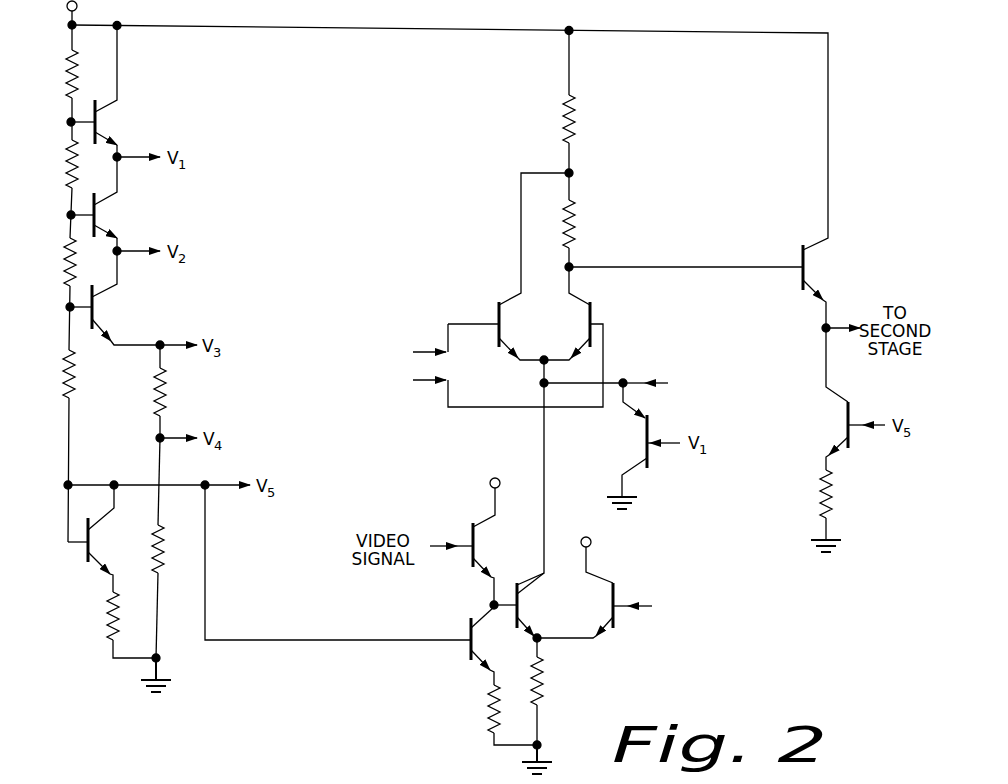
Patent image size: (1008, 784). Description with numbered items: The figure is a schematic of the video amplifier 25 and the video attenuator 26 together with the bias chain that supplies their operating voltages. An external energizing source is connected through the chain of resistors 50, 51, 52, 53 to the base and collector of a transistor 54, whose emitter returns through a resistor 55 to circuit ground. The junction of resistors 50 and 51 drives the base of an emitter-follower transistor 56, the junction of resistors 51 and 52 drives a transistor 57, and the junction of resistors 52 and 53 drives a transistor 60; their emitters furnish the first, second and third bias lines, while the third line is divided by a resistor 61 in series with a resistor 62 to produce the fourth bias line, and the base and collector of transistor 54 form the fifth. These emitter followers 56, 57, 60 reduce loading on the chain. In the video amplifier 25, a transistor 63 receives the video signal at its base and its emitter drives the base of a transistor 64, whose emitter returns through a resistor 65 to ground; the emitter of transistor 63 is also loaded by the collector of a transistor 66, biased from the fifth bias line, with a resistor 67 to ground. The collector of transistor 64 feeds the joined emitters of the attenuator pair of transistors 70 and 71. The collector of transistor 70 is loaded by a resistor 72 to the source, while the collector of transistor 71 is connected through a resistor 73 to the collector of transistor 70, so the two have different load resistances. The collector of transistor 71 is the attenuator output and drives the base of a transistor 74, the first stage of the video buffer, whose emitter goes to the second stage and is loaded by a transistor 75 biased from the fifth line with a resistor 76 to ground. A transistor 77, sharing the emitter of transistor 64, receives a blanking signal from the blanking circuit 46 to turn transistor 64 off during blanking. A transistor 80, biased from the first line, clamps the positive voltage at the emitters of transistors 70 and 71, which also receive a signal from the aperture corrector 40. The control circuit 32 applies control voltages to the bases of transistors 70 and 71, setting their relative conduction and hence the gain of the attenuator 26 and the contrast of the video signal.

The video amplifier 25 is at (455, 500).
The video attenuator 26 is at (480, 292).
The control circuit 32 is at (383, 379).
The aperture corrector 40 is at (699, 386).
The blanking circuit 46 is at (677, 612).
The resistor 50 is at (69, 69).
The resistor 51 is at (70, 165).
The resistor 52 is at (68, 253).
The resistor 53 is at (64, 360).
The transistor 54 is at (120, 553).
The resistor 55 is at (112, 609).
The transistor 56 is at (126, 124).
The transistor 57 is at (125, 216).
The transistor 60 is at (123, 309).
The resistor 61 is at (154, 391).
The resistor 62 is at (156, 541).
The transistor 63 is at (504, 555).
The transistor 64 is at (548, 615).
The resistor 65 is at (546, 694).
The transistor 66 is at (502, 651).
The resistor 67 is at (489, 714).
The transistor 70 is at (531, 326).
The transistor 71 is at (586, 326).
The resistor 72 is at (576, 123).
The resistor 73 is at (576, 228).
The transistor 74 is at (834, 277).
The transistor 75 is at (843, 425).
The resistor 76 is at (834, 508).
The transistor 77 is at (606, 615).
The transistor 80 is at (638, 455).